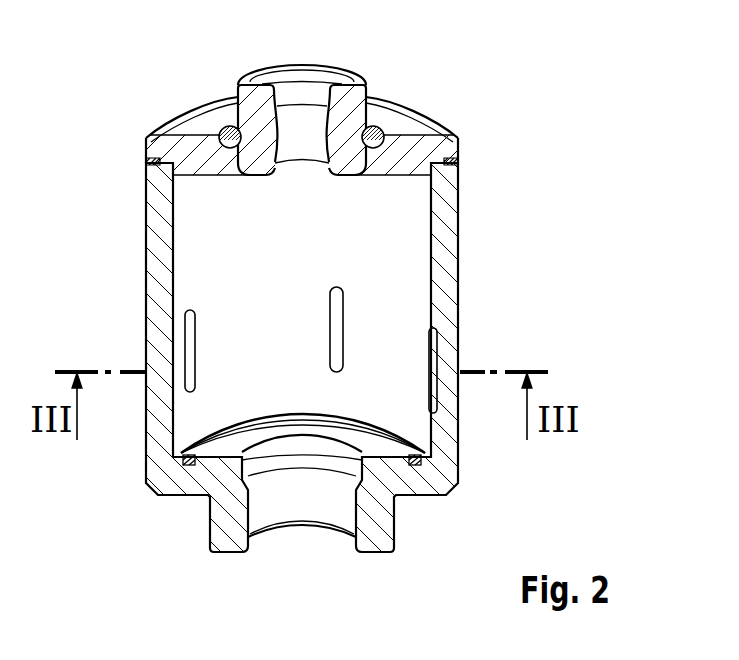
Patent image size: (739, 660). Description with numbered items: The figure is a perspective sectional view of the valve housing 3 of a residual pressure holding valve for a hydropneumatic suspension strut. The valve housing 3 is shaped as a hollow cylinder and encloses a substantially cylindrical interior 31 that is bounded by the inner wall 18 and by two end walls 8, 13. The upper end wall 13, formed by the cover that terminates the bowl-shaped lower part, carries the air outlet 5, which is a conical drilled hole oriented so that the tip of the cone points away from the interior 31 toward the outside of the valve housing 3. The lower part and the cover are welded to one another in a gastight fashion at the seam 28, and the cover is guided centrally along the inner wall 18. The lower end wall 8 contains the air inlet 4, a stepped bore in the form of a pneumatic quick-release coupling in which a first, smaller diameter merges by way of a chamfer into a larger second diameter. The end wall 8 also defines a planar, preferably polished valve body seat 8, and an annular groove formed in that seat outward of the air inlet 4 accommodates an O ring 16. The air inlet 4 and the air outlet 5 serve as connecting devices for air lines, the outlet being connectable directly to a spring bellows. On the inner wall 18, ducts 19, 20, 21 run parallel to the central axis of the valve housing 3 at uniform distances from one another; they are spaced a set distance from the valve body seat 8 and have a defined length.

The valve housing 3 is at (369, 330).
The air inlet 4 is at (305, 513).
The air outlet 5 is at (297, 87).
The end wall 8 is at (232, 440).
The end wall 13 is at (191, 176).
The O ring 16 is at (457, 490).
The inner wall 18 is at (427, 245).
The duct 19 is at (436, 352).
The duct 20 is at (342, 308).
The duct 21 is at (192, 327).
The seam 28 is at (459, 162).
The interior 31 is at (316, 245).